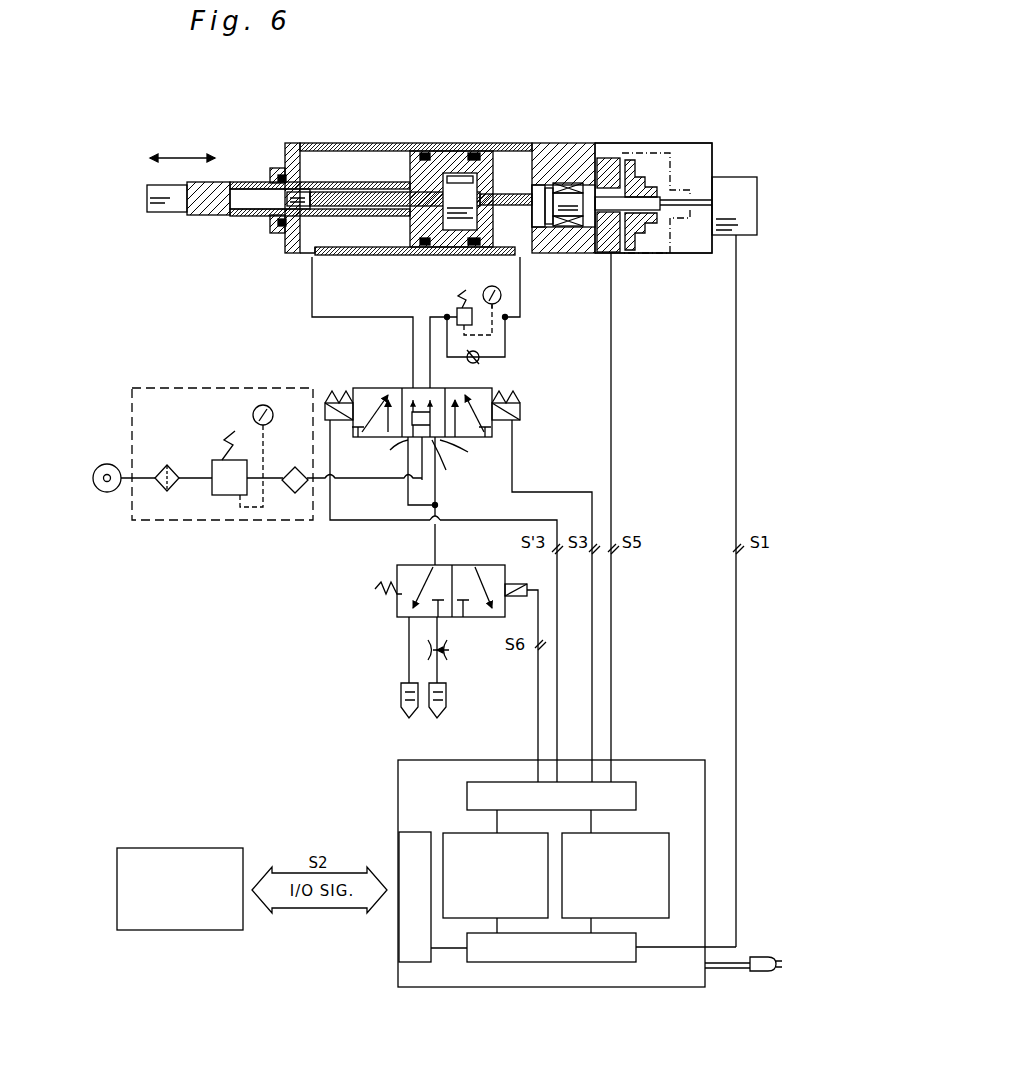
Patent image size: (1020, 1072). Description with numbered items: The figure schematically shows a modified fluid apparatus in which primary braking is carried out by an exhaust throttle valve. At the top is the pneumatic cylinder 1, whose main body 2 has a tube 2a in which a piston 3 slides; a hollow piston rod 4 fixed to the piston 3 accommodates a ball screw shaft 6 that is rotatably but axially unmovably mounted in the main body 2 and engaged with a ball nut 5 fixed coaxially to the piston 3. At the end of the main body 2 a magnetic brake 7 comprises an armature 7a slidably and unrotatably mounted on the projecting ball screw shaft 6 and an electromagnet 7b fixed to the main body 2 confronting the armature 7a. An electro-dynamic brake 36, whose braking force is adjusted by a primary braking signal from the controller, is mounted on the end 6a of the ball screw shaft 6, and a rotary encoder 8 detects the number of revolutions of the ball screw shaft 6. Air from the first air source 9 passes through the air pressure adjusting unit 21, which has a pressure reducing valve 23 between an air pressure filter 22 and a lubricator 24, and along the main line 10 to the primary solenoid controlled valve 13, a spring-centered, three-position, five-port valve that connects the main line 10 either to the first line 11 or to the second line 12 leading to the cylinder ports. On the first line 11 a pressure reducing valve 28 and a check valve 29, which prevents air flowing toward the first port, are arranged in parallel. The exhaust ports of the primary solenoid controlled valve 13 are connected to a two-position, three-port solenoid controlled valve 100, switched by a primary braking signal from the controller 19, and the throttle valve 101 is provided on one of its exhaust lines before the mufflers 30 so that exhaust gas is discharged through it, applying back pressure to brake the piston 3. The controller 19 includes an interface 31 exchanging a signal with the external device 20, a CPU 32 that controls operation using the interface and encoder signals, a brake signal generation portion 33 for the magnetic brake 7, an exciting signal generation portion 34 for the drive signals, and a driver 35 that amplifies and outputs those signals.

The pneumatic cylinder 1 is at (412, 262).
The main body 2 is at (556, 141).
The tube 2a is at (330, 258).
The piston 3 is at (442, 160).
The hollow piston rod 4 is at (218, 187).
The ball nut 5 is at (458, 205).
The ball screw shaft 6 is at (360, 193).
The end of the ball screw shaft 6a is at (705, 255).
The magnetic brake 7 is at (620, 262).
The armature 7a is at (640, 175).
The electromagnet 7b is at (612, 158).
The rotary encoder 8 is at (732, 198).
The first air source 9 is at (107, 464).
The main line 10 is at (345, 480).
The first line 11 is at (522, 292).
The second line 12 is at (312, 290).
The primary solenoid controlled valve 13 is at (372, 386).
The controller 19 is at (650, 758).
The external device 20 is at (176, 931).
The air pressure adjusting unit 21 is at (200, 385).
The air pressure filter 22 is at (166, 465).
The pressure reducing valve 23 is at (218, 460).
The lubricator 24 is at (295, 466).
The pressure reducing valve 28 is at (457, 310).
The check valve 29 is at (482, 358).
The muffler 30 is at (400, 700).
The interface 31 is at (398, 932).
The CPU 32 is at (614, 955).
The brake signal generation portion 33 is at (668, 892).
The exciting signal generation portion 34 is at (463, 835).
The driver 35 is at (625, 795).
The electro-dynamic brake 36 is at (676, 256).
The solenoid controlled valve 100 is at (452, 563).
The throttle valve 101 is at (452, 653).